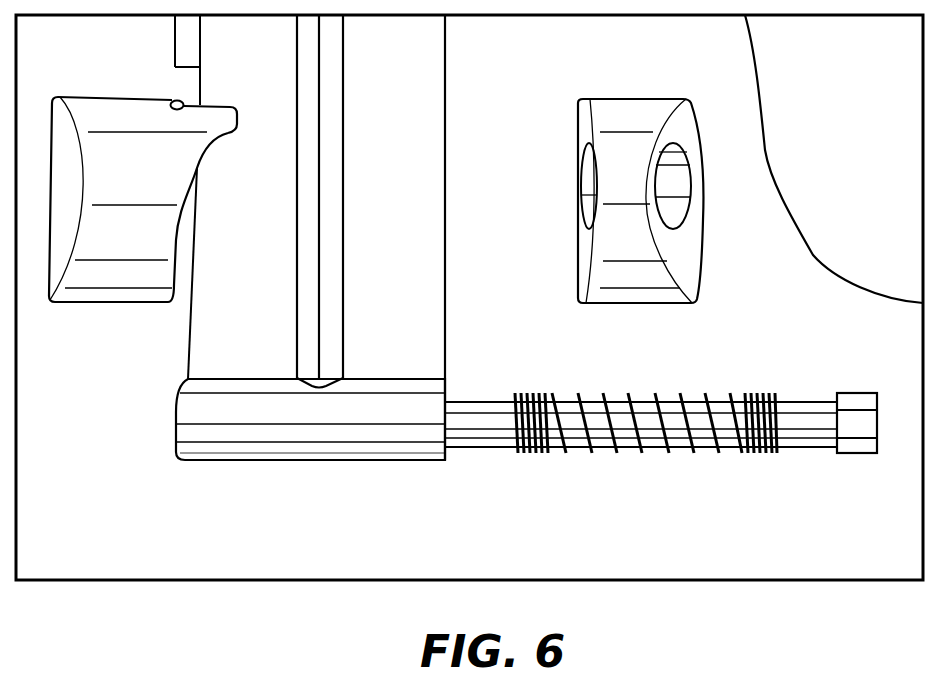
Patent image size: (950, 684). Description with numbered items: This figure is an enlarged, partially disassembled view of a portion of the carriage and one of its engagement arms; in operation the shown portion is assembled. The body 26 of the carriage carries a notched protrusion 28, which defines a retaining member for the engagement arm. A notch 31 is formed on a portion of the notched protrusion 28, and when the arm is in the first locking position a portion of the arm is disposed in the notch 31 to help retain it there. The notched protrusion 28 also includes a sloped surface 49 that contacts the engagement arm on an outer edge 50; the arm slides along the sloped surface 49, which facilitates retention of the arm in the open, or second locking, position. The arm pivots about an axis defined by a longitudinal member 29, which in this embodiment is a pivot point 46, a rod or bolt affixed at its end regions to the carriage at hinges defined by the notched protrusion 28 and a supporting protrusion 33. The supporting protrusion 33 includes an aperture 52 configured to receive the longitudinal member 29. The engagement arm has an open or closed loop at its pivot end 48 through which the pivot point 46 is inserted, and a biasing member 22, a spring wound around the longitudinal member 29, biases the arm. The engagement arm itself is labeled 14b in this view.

The housing portion 14b is at (409, 215).
The biasing member 22 is at (735, 455).
The body 26 is at (96, 546).
The notched protrusion 28 is at (162, 163).
The longitudinal member 29 is at (798, 408).
The notch 31 is at (210, 103).
The supporting protrusion 33 is at (708, 169).
The pivot point 46 is at (470, 432).
The pivot end 48 is at (285, 447).
The sloped surface 49 is at (183, 195).
The outer edge 50 is at (190, 332).
The aperture 52 is at (677, 182).